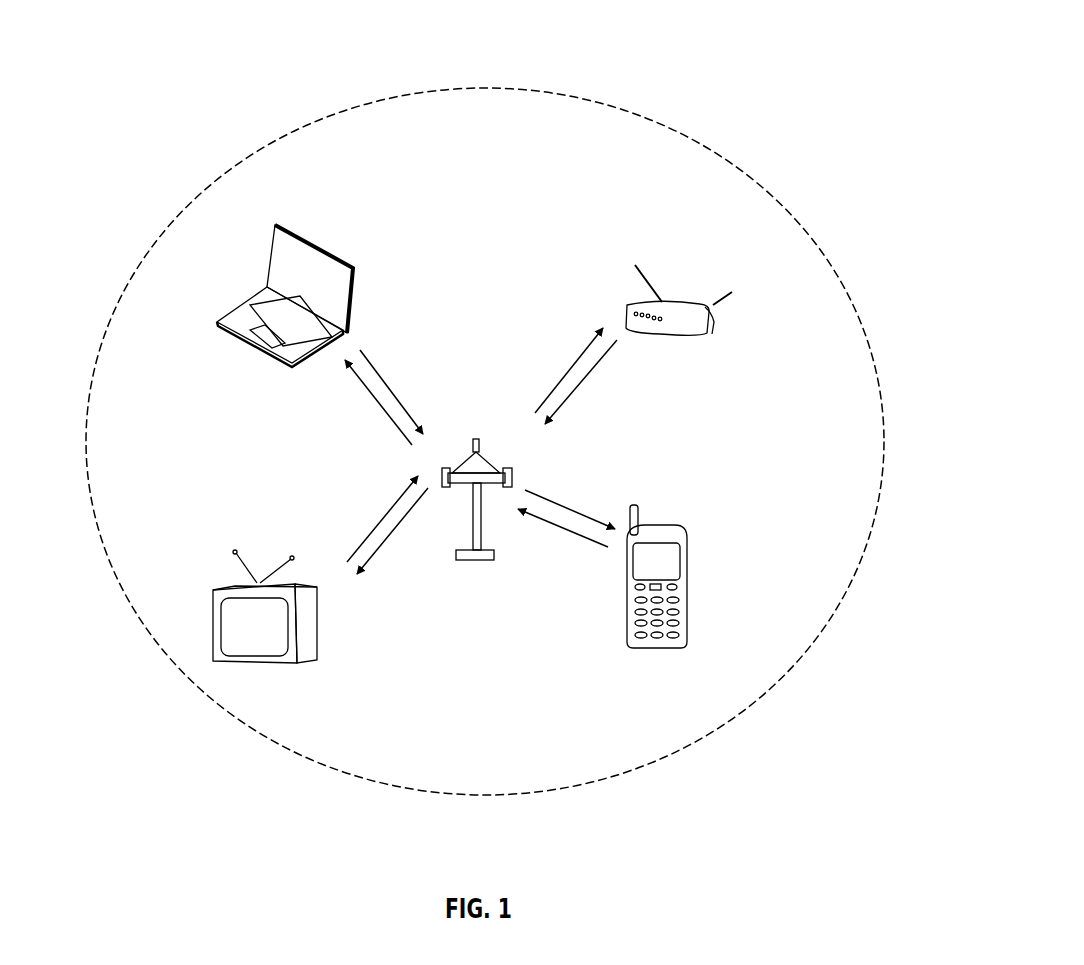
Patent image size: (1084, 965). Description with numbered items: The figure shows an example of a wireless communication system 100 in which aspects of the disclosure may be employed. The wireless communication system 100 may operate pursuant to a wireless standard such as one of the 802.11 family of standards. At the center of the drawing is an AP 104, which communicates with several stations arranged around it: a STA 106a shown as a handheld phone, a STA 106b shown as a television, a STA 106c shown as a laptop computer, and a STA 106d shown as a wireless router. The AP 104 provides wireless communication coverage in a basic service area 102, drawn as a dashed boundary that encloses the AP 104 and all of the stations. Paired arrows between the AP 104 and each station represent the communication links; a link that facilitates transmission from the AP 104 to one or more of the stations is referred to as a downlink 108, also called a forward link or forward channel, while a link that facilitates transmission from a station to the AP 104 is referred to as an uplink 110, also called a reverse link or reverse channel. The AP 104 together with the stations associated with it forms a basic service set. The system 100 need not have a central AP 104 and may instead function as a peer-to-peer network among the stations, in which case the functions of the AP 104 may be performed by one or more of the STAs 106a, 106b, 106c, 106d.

The wireless communication system 100 is at (777, 41).
The basic service area 102 is at (822, 255).
The AP 104 is at (475, 438).
The STA 106a is at (663, 525).
The STA 106b is at (311, 583).
The STA 106c is at (284, 224).
The STA 106d is at (690, 305).
The downlink 108 is at (557, 495).
The uplink 110 is at (515, 528).